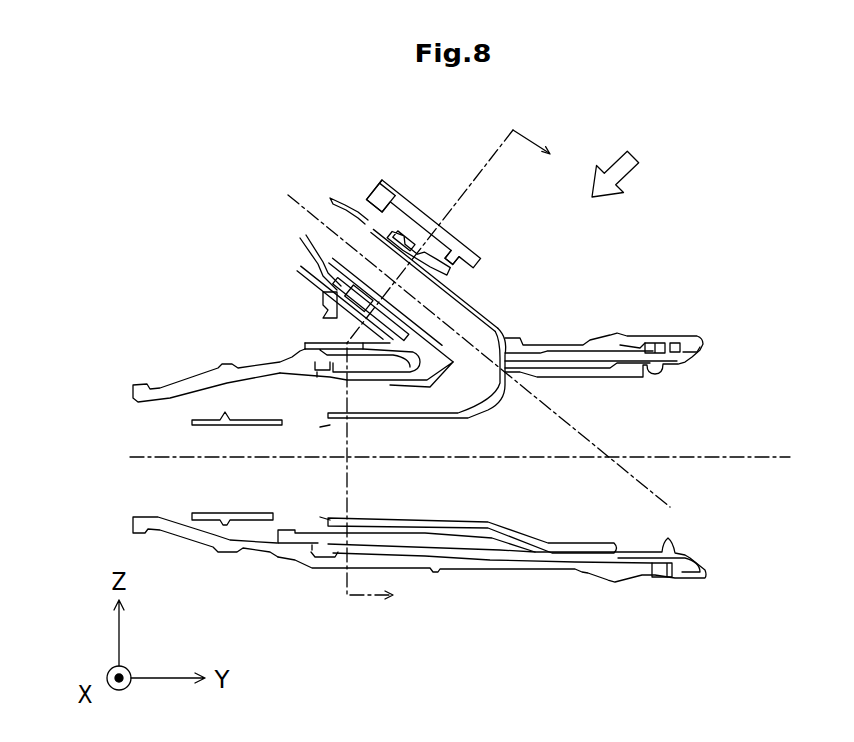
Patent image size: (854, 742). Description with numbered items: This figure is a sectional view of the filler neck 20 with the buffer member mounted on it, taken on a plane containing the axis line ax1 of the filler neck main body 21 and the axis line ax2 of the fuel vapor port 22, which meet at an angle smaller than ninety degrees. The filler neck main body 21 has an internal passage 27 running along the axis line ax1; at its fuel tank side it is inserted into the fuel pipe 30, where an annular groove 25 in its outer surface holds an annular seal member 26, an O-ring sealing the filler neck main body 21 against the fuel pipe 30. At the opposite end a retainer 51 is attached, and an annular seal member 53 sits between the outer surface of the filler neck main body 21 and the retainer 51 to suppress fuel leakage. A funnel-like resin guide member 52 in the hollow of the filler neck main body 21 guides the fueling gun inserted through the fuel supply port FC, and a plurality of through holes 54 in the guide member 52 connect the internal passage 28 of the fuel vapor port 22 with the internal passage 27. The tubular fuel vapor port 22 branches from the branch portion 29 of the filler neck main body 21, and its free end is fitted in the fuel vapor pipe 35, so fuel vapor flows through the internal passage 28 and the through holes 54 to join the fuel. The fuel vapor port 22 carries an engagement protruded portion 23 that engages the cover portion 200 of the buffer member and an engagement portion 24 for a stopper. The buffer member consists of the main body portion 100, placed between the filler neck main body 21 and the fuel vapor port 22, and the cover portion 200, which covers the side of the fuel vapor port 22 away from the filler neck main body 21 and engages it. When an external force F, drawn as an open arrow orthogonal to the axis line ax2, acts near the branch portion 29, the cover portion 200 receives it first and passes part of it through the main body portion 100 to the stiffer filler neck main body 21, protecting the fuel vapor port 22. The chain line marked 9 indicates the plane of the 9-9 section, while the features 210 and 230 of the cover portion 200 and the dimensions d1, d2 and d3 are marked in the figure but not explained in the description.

The filler neck 20 is at (605, 316).
The filler neck main body 21 is at (419, 580).
The fuel vapor port 22 is at (406, 306).
The engagement protruded portion 23 is at (456, 317).
The engagement portion 24 is at (497, 292).
The annular groove 25 is at (317, 555).
The annular seal member 26 is at (312, 550).
The internal passage 27 is at (661, 452).
The internal passage 28 is at (431, 296).
The branch portion 29 is at (508, 326).
The fuel pipe 30 is at (180, 384).
The fuel vapor pipe 35 is at (337, 200).
The retainer 51 is at (670, 348).
The guide member 52 is at (398, 422).
The annular seal member 53 is at (657, 343).
The through holes 54 is at (322, 437).
The main body portion 100 is at (327, 332).
The cover portion 200 is at (448, 206).
The end block 210 is at (385, 182).
The projection 230 is at (468, 250).
The 9-9 section 9 is at (459, 373).
The external force F is at (624, 163).
The fuel supply port FC is at (700, 382).
The axis line ax1 is at (517, 460).
The axis line ax2 is at (596, 440).
The distance d1 is at (323, 337).
The distance d2 is at (322, 299).
The distance d3 is at (282, 288).